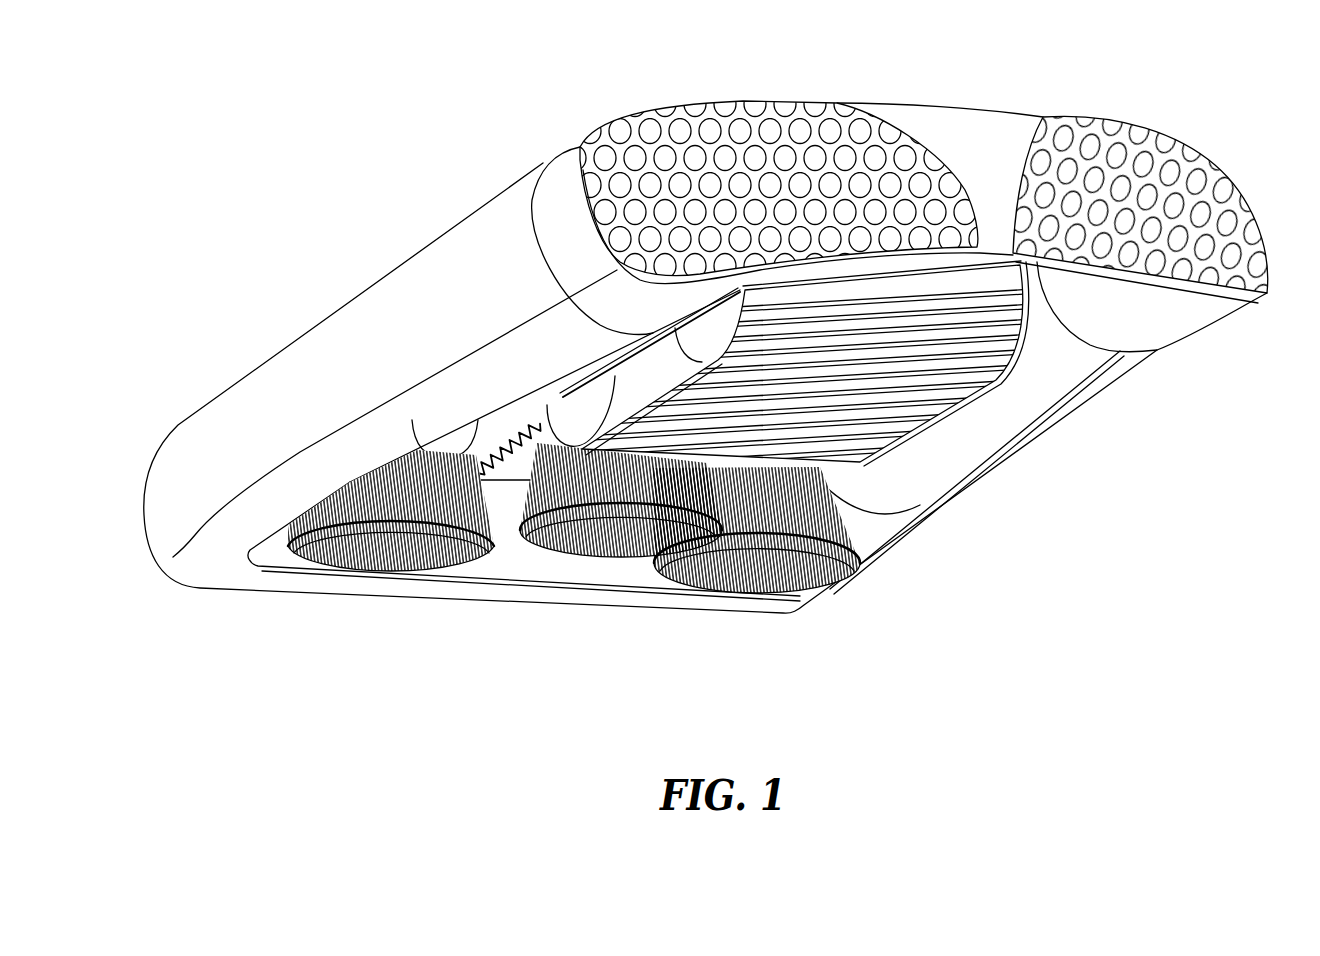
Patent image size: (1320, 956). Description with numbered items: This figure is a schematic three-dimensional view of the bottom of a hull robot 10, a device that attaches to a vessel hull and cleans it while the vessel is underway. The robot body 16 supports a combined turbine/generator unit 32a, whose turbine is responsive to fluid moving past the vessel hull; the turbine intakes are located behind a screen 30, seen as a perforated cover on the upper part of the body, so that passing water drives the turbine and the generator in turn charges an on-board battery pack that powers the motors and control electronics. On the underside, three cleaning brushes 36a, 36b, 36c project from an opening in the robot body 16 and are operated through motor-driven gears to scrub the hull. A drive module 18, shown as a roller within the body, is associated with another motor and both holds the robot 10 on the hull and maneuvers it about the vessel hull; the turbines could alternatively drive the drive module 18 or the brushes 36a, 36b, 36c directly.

The hull robot 10 is at (440, 138).
The robot body 16 is at (300, 352).
The drive module 18 is at (660, 384).
The screen 30 is at (1150, 143).
The combined turbine/generator unit 32a is at (453, 447).
The cleaning brush 36a is at (371, 578).
The cleaning brush 36b is at (550, 560).
The cleaning brush 36c is at (707, 593).